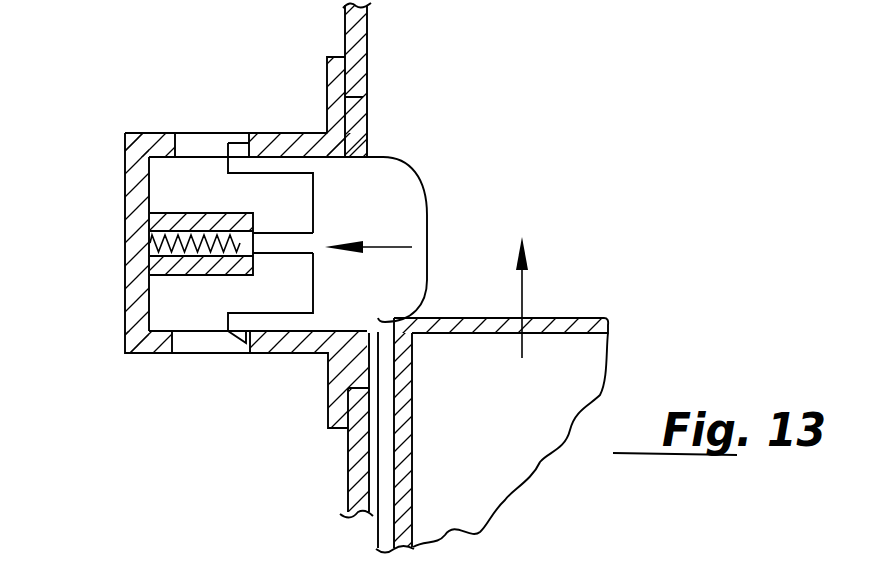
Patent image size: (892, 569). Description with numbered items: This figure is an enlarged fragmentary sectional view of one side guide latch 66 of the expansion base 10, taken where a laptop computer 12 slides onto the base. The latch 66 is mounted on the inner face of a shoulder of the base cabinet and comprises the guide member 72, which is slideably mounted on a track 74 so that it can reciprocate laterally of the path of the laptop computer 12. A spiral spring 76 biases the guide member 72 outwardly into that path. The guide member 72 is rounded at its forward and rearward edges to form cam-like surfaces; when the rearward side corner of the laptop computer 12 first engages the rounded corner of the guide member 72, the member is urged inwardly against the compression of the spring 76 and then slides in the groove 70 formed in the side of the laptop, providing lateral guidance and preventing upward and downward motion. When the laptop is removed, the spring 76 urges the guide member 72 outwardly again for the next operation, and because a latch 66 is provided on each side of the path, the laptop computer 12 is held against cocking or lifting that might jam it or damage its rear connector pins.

The expansion base 10 is at (372, 68).
The laptop computer 12 is at (598, 306).
The side guide latch 66 is at (120, 168).
The groove 70 is at (388, 447).
The guide member 72 is at (398, 193).
The track 74 is at (287, 143).
The spiral spring 76 is at (150, 243).